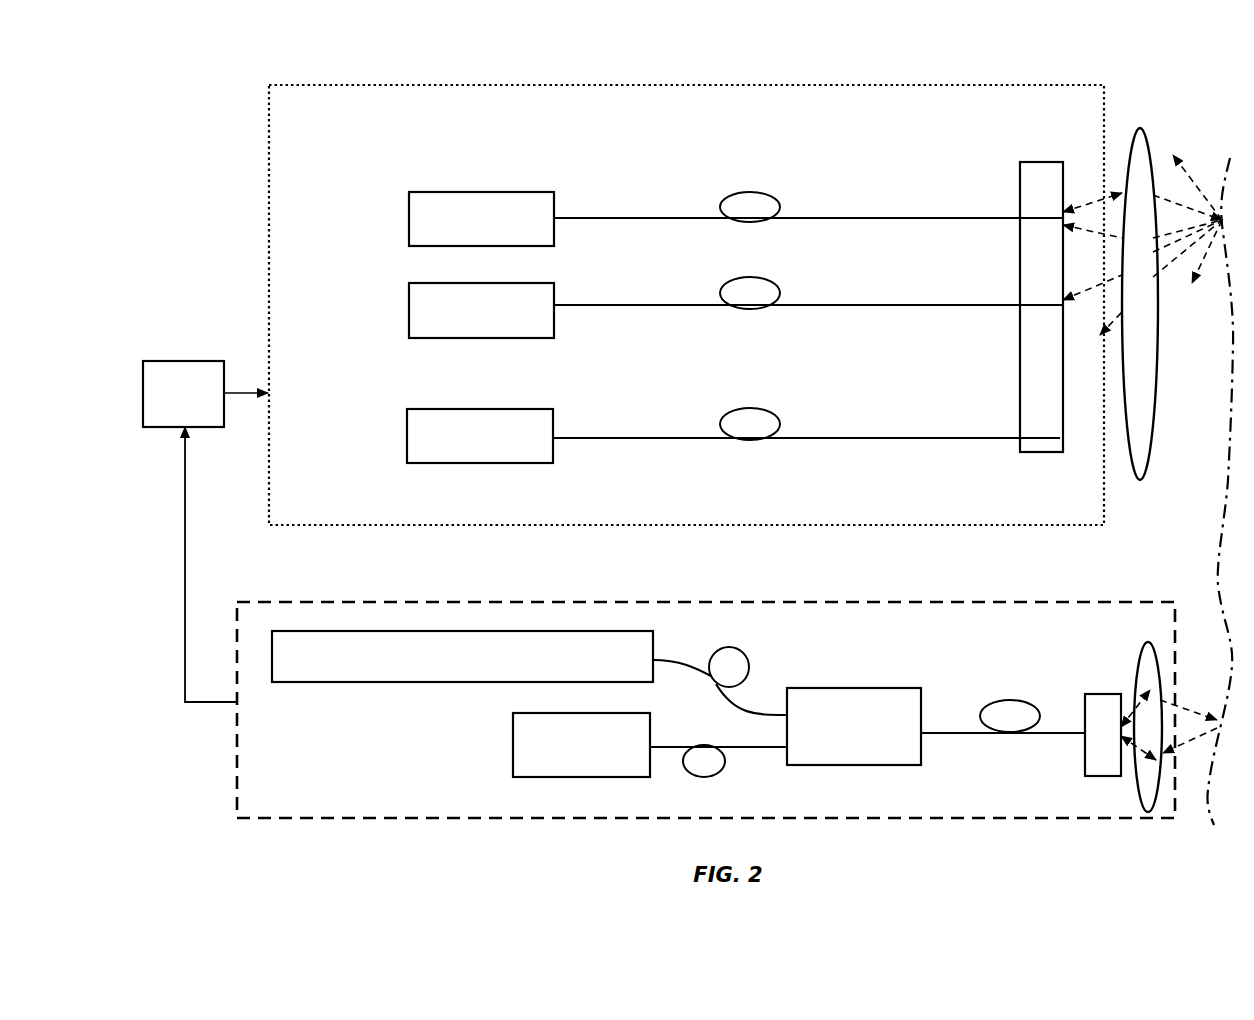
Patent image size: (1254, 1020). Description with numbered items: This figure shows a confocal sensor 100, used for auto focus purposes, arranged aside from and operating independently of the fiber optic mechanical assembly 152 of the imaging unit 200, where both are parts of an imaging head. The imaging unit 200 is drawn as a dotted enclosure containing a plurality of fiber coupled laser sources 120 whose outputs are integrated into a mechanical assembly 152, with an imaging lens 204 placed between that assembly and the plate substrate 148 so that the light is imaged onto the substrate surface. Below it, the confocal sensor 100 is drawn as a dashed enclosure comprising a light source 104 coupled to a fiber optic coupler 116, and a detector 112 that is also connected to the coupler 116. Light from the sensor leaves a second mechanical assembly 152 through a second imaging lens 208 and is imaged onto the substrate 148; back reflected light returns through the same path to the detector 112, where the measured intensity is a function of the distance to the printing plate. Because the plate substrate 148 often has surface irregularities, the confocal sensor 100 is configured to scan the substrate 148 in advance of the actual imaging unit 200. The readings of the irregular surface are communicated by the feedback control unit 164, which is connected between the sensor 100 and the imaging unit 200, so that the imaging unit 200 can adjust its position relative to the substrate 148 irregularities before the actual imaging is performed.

The confocal sensor 100 is at (222, 752).
The light source 104 is at (445, 668).
The detector 112 is at (565, 756).
The fiber optic coupler 116 is at (837, 738).
The fiber coupled laser sources 120 is at (464, 230).
The substrate 148 is at (1228, 478).
The mechanical assembly 152 is at (1038, 162).
The feedback control unit 164 is at (166, 404).
The imaging unit 200 is at (258, 187).
The imaging lens 204 is at (1140, 128).
The imaging lens 208 is at (1157, 668).